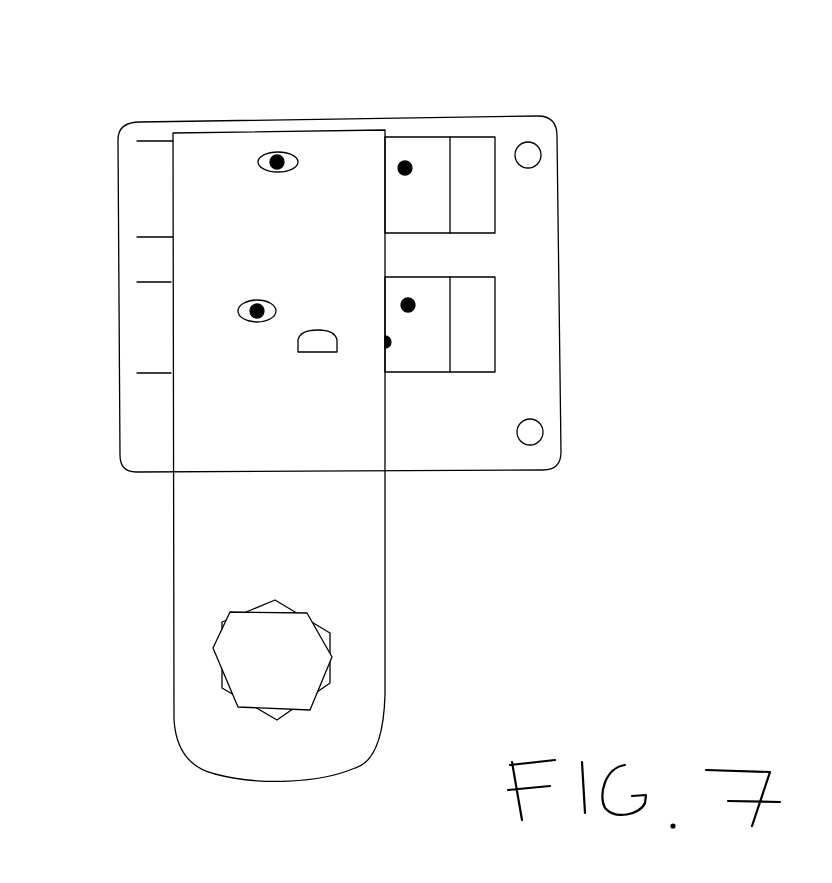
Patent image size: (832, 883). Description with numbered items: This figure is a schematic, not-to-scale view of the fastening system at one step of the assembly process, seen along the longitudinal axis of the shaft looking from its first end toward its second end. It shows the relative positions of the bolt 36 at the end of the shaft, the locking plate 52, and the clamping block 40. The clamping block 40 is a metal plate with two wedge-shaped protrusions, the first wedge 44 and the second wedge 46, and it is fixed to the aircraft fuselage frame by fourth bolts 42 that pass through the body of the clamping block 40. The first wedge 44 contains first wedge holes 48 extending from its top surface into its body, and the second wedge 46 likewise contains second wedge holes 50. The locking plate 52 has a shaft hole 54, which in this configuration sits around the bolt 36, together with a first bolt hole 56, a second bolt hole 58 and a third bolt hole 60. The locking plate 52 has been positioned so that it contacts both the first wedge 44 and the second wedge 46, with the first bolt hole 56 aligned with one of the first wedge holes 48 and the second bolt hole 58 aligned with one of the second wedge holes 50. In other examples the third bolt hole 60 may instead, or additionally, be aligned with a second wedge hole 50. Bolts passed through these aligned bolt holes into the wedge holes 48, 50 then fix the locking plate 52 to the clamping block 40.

The outer bolt 36 is at (272, 661).
The clamping block 40 is at (558, 256).
The fourth bolt 42 is at (540, 156).
The first wedge 44 is at (433, 138).
The second wedge 46 is at (430, 372).
The first wedge hole 48 is at (281, 157).
The second wedge hole 50 is at (262, 300).
The locking plate 52 is at (185, 558).
The shaft hole 54 is at (330, 635).
The first bolt hole 56 is at (290, 174).
The second bolt hole 58 is at (245, 323).
The third bolt hole 60 is at (318, 352).